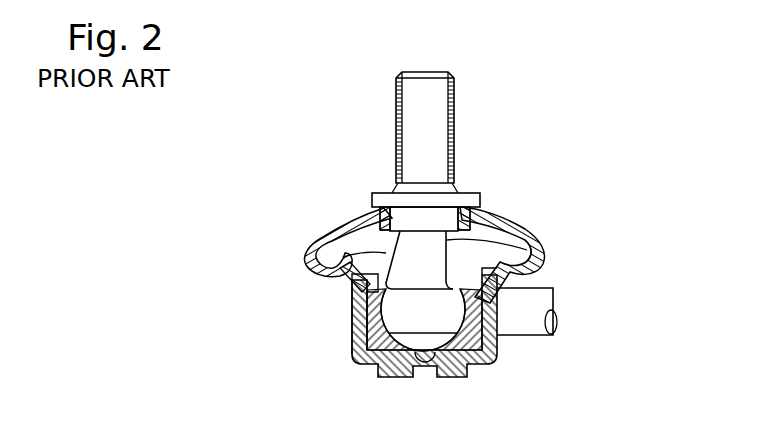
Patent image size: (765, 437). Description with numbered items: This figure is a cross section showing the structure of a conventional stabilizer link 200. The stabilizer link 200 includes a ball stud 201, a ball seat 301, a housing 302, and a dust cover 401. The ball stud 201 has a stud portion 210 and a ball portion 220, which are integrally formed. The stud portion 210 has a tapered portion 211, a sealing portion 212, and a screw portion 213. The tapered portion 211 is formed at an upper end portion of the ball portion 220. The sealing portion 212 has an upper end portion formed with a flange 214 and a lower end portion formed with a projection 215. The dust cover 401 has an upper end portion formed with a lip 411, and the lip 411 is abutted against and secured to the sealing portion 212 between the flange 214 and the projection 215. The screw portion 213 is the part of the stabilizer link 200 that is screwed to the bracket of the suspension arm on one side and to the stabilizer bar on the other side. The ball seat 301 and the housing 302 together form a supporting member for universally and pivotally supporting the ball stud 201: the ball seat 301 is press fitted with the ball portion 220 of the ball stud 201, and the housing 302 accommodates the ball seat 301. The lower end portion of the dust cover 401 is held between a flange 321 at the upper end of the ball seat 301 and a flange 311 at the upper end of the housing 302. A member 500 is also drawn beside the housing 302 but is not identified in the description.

The stabilizer link 200 is at (578, 108).
The stud portion 210 is at (412, 126).
The screw portion 213 is at (452, 98).
The ball stud 201 is at (457, 137).
The flange 214 is at (479, 198).
The sealing portion 212 is at (438, 219).
The projection 215 is at (494, 228).
The tapered portion 211 is at (538, 251).
The ball portion 220 is at (440, 322).
The ball seat 301 is at (497, 351).
The housing 302 is at (360, 334).
The flange 311 is at (353, 282).
The flange 321 is at (322, 247).
The dust cover 401 is at (348, 230).
The lip 411 is at (378, 211).
The arm member 500 is at (555, 322).